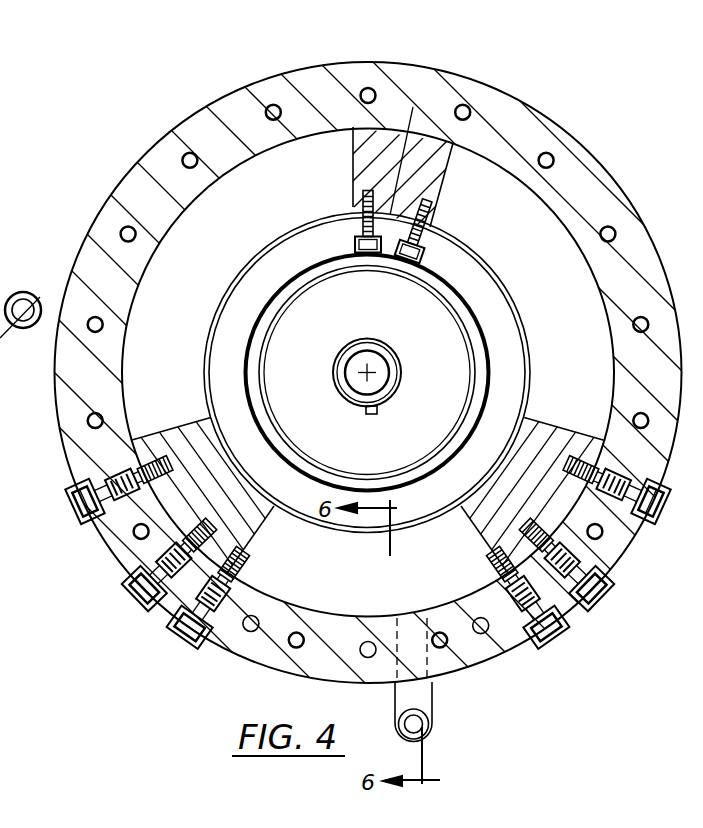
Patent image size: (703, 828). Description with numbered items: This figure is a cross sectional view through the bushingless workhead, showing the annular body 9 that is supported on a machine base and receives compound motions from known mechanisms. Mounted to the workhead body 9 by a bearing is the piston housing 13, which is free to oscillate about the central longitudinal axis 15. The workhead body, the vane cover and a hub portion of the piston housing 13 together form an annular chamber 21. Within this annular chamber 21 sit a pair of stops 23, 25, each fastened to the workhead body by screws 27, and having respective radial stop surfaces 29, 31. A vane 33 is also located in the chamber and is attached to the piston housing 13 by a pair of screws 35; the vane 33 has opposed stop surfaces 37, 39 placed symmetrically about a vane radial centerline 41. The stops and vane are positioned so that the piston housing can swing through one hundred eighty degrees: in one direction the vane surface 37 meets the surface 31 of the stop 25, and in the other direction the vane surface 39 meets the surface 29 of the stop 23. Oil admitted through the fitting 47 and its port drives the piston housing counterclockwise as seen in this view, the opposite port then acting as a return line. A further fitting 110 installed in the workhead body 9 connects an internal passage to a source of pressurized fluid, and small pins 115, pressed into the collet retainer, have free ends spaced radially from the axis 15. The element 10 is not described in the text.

The annular body 9 is at (540, 217).
The support member 10 is at (0, 275).
The piston housing 13 is at (502, 262).
The central longitudinal axis 15 is at (383, 364).
The annular chamber 21 is at (584, 317).
The stop 23 is at (560, 490).
The stop 25 is at (127, 562).
The screws 27 is at (95, 470).
The radial stop surface 29 is at (567, 427).
The radial stop surface 31 is at (178, 426).
The vane 33 is at (388, 135).
The screws 35 is at (406, 268).
The stop surface 37 is at (352, 160).
The stop surface 39 is at (457, 186).
The vane radial centerline 41 is at (432, 150).
The fitting 47 is at (347, 397).
The fitting 110 is at (433, 697).
The pins 115 is at (379, 412).